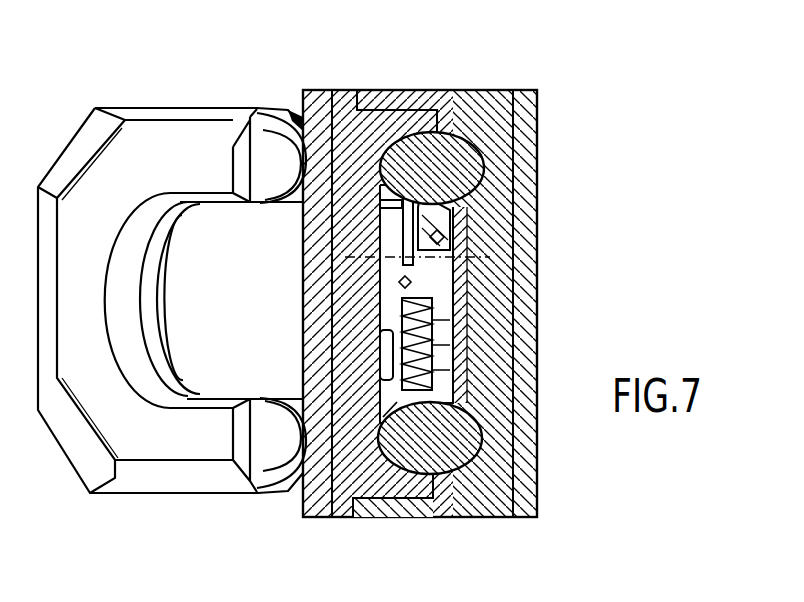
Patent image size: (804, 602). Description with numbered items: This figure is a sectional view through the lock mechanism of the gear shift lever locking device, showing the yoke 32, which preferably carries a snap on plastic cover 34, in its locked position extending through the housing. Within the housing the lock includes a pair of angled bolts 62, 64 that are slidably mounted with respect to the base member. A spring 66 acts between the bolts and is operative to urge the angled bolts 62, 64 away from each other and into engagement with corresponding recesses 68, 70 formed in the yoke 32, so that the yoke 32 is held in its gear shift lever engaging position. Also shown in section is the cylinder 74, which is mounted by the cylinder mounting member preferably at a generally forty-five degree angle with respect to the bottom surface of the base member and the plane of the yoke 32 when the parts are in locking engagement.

The yoke 32 is at (282, 157).
The snap on plastic cover 34 is at (152, 120).
The angled bolt 62 is at (397, 140).
The angled bolt 64 is at (362, 455).
The spring 66 is at (457, 352).
The recess 68 is at (399, 150).
The recess 70 is at (383, 497).
The cylinder 74 is at (440, 237).